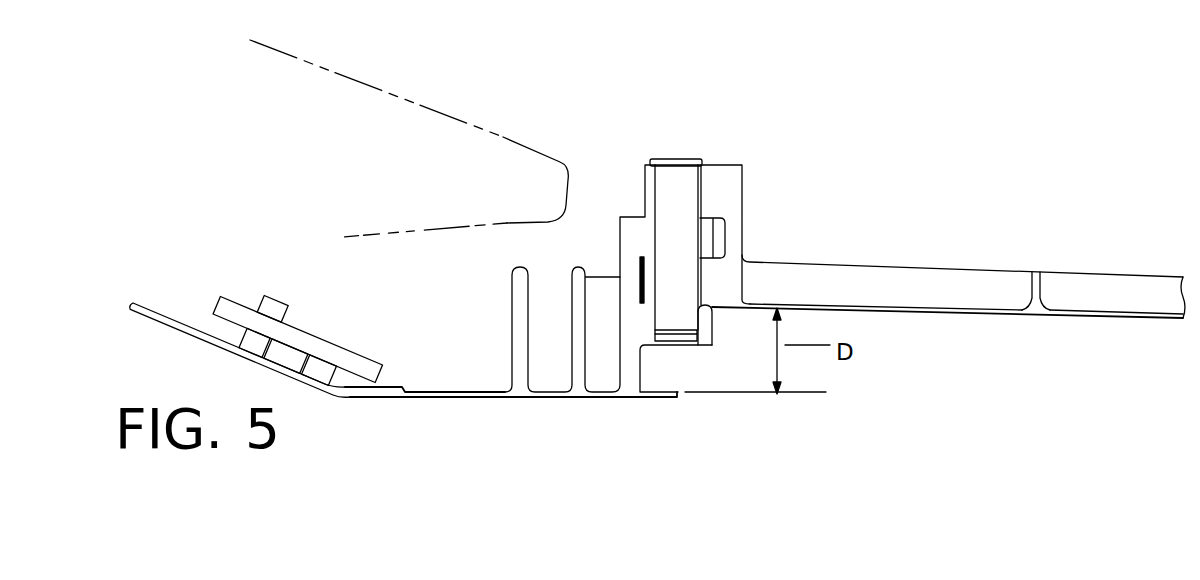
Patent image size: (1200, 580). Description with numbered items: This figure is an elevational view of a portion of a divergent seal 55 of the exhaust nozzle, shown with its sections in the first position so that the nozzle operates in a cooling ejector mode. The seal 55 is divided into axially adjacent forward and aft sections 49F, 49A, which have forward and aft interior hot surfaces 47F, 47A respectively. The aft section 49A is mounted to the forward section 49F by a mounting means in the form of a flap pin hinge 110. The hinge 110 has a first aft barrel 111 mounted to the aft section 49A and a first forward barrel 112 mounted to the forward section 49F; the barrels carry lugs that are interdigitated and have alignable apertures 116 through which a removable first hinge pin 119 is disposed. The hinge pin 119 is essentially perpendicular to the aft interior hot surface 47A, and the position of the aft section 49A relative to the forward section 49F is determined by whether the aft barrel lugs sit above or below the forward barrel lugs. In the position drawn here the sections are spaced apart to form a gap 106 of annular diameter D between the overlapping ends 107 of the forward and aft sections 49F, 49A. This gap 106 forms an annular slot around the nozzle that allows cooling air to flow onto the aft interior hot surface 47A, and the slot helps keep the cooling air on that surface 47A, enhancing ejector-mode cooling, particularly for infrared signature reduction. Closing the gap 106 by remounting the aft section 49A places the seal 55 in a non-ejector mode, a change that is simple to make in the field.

The forward interior hot surface 47F is at (487, 396).
The forward section 49F is at (420, 388).
The first forward barrel 112 is at (618, 272).
The flap pin hinge 110 is at (709, 258).
The first aft barrel 111 is at (737, 190).
The alignable apertures 116 is at (700, 190).
The first hinge pin 119 is at (678, 162).
The overlapping ends 107 is at (712, 323).
The gap 106 is at (703, 377).
The aft interior hot surface 47A is at (855, 312).
The aft section 49A is at (955, 308).
The divergent seal 55 is at (862, 417).